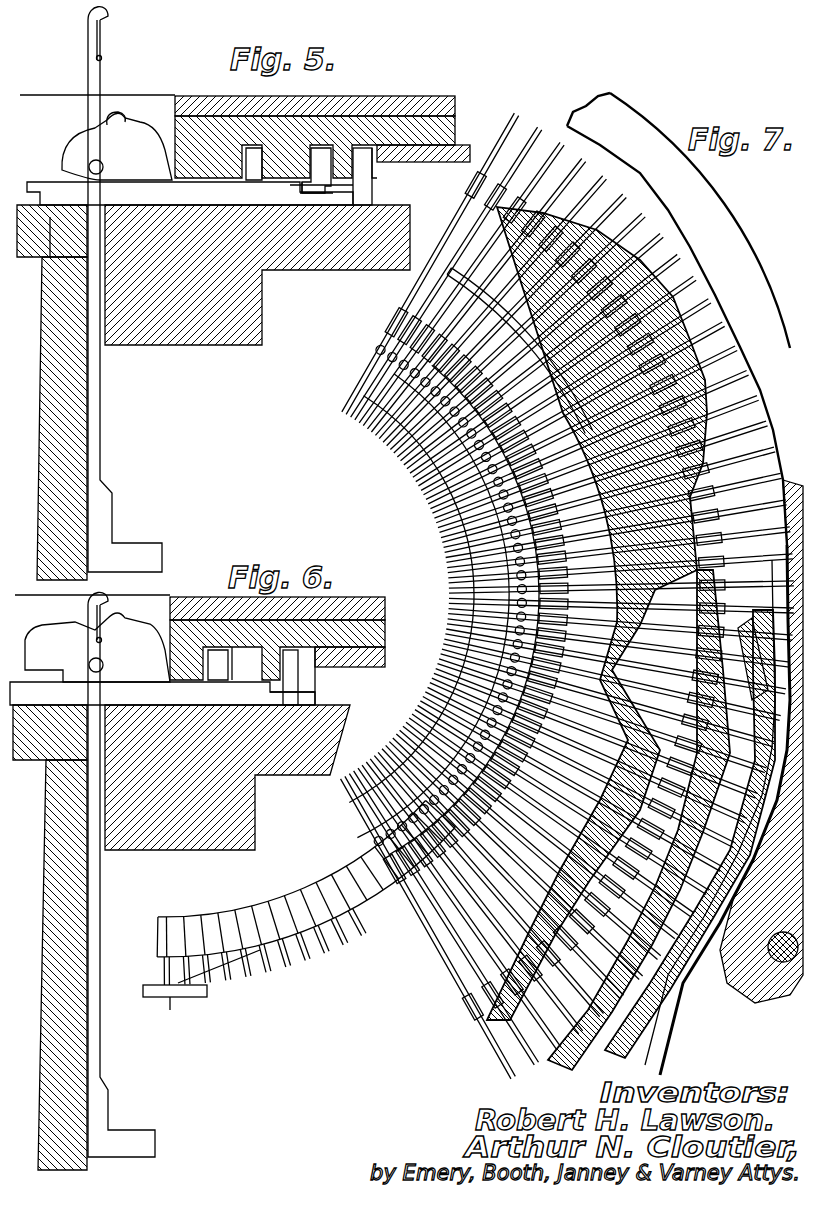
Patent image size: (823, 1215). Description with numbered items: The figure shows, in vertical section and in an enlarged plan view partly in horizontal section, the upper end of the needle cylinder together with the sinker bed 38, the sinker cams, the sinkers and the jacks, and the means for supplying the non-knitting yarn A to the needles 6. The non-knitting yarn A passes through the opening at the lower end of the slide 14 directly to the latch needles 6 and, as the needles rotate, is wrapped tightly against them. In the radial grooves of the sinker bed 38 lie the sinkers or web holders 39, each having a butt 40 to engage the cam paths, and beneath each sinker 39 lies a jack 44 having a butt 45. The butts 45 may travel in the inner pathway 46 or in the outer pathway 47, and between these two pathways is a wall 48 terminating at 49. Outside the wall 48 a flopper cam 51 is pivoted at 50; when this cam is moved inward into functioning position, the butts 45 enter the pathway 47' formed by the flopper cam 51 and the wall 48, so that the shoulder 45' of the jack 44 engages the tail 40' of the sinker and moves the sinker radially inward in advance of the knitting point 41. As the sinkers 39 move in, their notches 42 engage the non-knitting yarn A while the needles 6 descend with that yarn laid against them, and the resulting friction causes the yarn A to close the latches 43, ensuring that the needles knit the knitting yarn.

In FIG. 5, the needles 6 is at (96, 402).
In FIG. 6, the needles 6 is at (96, 900).
In FIG. 7, the needles 6 is at (336, 935).
In FIG. 7, the slide 14 is at (195, 998).
In FIG. 5, the sinker bed 38 is at (200, 340).
In FIG. 6, the sinker bed 38 is at (195, 848).
In FIG. 5, the sinkers or web holders 39 is at (145, 135).
In FIG. 6, the sinkers or web holders 39 is at (145, 650).
In FIG. 7, the sinkers or web holders 39 is at (412, 345).
In FIG. 5, the butts 40 is at (273, 125).
In FIG. 6, the butts 40 is at (221, 628).
In FIG. 7, the butts 40 is at (506, 617).
In FIG. 5, the tail 40' is at (335, 241).
In FIG. 6, the tail 40' is at (250, 668).
In FIG. 7, the knitting point 41 is at (652, 486).
In FIG. 5, the notches 42 is at (118, 115).
In FIG. 5, the latches 43 is at (104, 40).
In FIG. 6, the latches 43 is at (104, 605).
In FIG. 5, the jack 44 is at (272, 197).
In FIG. 6, the jack 44 is at (255, 700).
In FIG. 5, the butt 45 is at (364, 137).
In FIG. 6, the butt 45 is at (310, 641).
In FIG. 7, the butt 45 is at (566, 586).
In FIG. 5, the shoulder 45' is at (360, 185).
In FIG. 6, the shoulder 45' is at (320, 689).
In FIG. 5, the inner pathway 46 is at (321, 150).
In FIG. 7, the inner pathway 46 is at (530, 1030).
In FIG. 7, the outer pathway 47 is at (715, 810).
In FIG. 7, the pathway 47' is at (639, 820).
In FIG. 5, the wall 48 is at (378, 152).
In FIG. 7, the wall 48 is at (765, 560).
In FIG. 7, the termination of wall 49 is at (755, 640).
In FIG. 7, the pivot 50 is at (783, 962).
In FIG. 5, the flopper cam 51 is at (465, 147).
In FIG. 6, the flopper cam 51 is at (386, 660).
In FIG. 7, the flopper cam 51 is at (748, 826).
In FIG. 5, the non-knitting yarn A is at (103, 58).
In FIG. 6, the non-knitting yarn A is at (103, 638).
In FIG. 7, the non-knitting yarn A is at (228, 970).